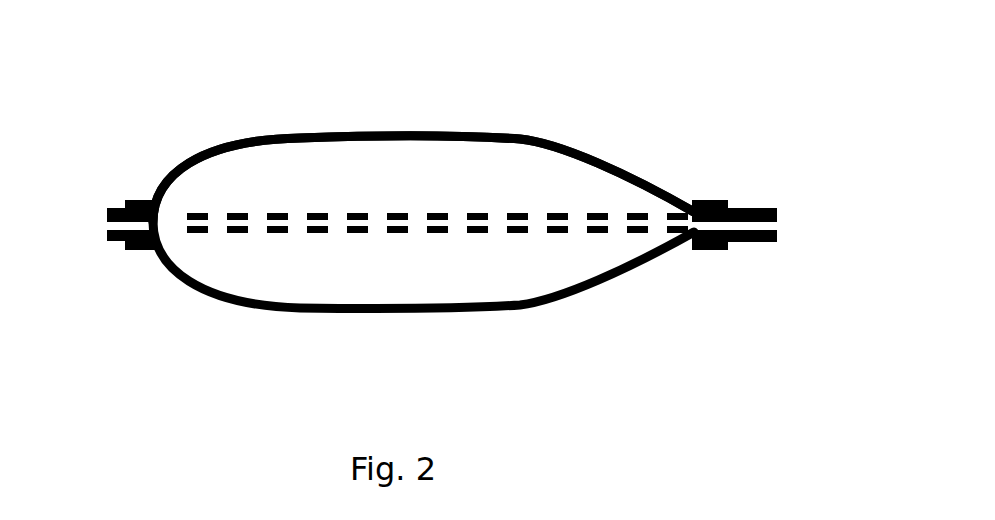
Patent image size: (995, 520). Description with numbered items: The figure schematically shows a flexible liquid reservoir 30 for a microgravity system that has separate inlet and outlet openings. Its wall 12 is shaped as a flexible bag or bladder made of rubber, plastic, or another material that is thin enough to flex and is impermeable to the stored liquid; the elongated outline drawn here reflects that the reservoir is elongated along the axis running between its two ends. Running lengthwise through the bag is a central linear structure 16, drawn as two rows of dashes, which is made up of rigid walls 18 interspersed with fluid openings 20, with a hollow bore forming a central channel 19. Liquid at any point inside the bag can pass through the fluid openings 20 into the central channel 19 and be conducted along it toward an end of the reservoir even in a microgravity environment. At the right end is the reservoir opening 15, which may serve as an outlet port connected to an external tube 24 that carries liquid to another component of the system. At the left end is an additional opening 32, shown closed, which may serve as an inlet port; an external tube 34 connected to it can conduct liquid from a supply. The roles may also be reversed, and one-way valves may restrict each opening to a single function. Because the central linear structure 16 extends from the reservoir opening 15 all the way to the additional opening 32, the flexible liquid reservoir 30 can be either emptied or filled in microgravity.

The flexible liquid reservoir 30 is at (150, 95).
The wall 12 is at (218, 298).
The central linear structure 16 is at (320, 196).
The fluid openings 20 is at (492, 217).
The rigid walls 18 is at (363, 230).
The central channel 19 is at (570, 225).
The reservoir opening 15 is at (712, 198).
The external tube 24 is at (747, 242).
The additional opening 32 is at (140, 202).
The external tube 34 is at (113, 238).